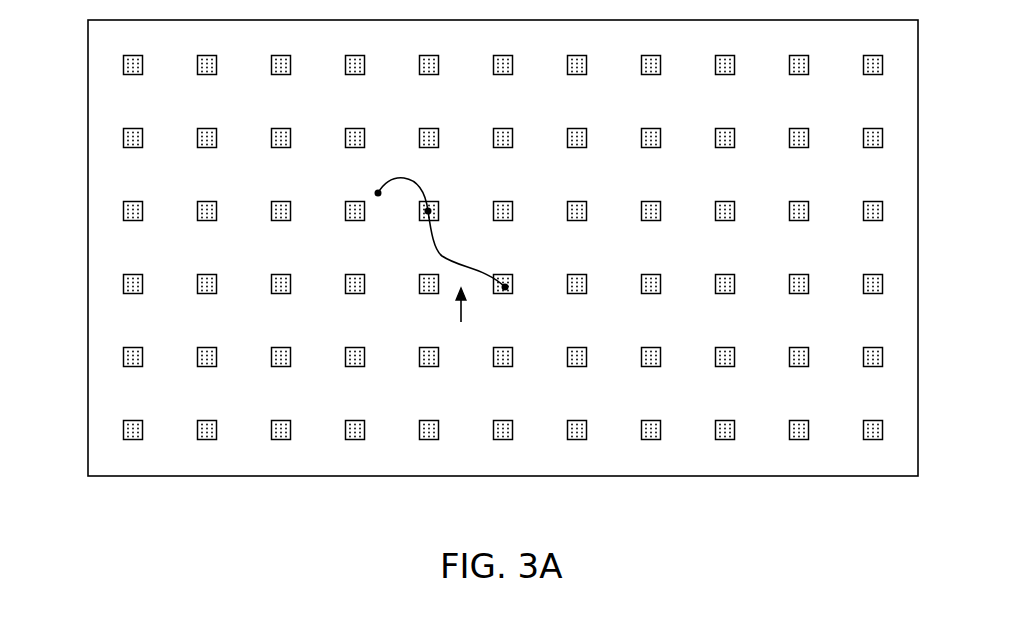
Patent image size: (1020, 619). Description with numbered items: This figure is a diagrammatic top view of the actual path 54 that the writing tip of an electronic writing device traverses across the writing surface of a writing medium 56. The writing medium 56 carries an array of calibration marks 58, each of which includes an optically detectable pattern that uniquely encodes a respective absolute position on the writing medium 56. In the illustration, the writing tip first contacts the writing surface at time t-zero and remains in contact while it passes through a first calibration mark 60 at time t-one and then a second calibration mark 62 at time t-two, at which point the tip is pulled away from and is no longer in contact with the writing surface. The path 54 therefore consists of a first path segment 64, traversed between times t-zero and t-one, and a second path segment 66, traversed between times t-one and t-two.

The path 54 is at (477, 313).
The writing medium 56 is at (87, 73).
The calibration marks 58 is at (208, 75).
The first calibration mark 60 is at (422, 217).
The second calibration mark 62 is at (512, 293).
The first path segment 64 is at (412, 185).
The second path segment 66 is at (445, 253).